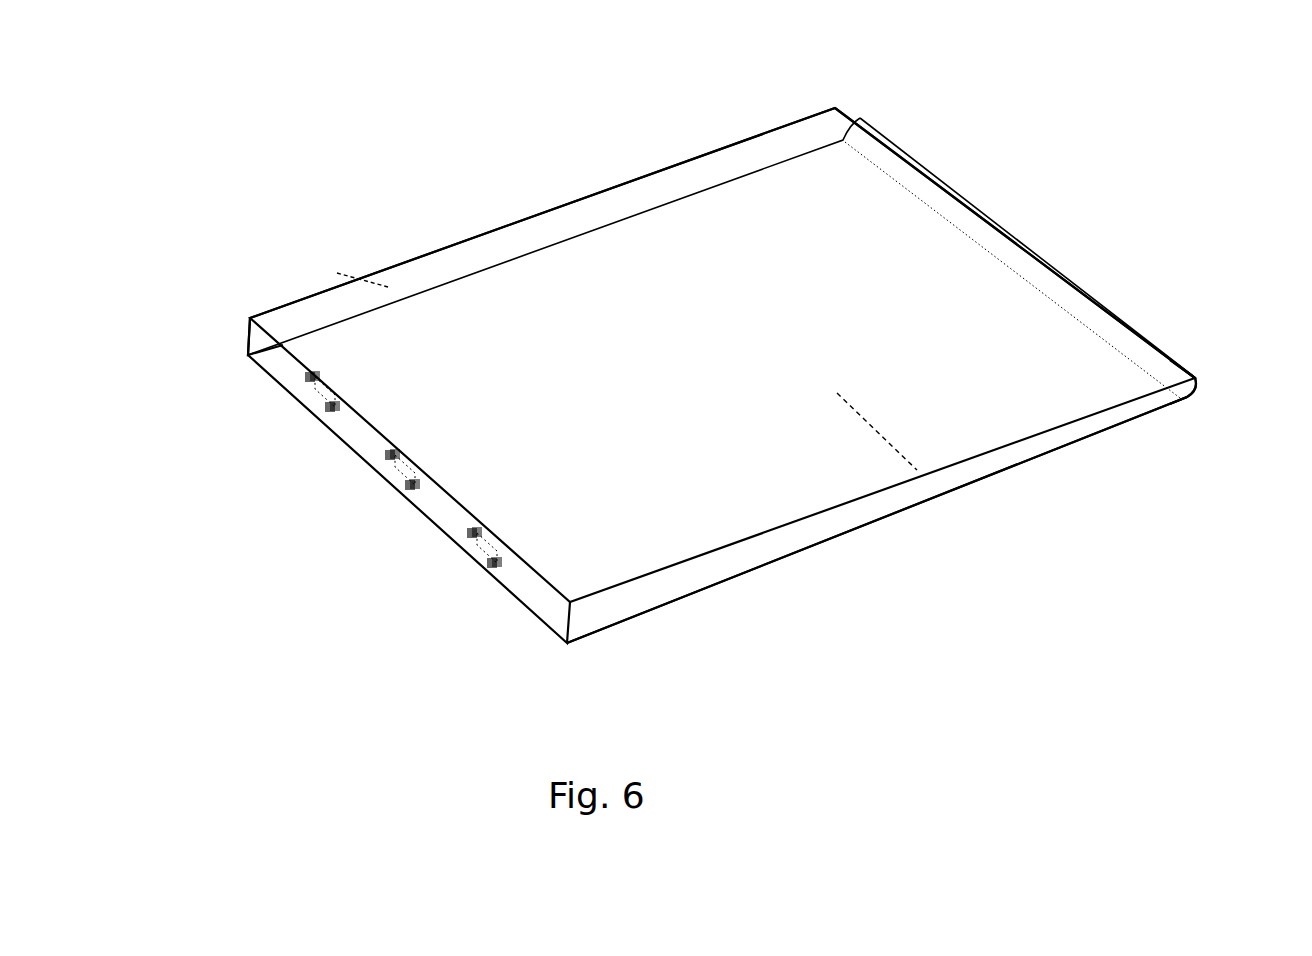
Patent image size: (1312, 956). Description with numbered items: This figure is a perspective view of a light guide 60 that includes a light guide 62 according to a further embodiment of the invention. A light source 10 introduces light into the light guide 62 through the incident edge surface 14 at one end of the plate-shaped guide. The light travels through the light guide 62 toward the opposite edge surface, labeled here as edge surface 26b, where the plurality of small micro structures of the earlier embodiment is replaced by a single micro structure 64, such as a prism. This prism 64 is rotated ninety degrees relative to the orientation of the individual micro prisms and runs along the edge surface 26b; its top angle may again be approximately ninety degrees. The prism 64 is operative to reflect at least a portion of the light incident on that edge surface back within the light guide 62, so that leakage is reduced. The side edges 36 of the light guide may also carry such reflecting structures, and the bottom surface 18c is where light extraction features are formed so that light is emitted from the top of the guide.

The light source 10 is at (493, 538).
The incident edge surface 14 is at (283, 355).
The slot 18c is at (940, 493).
The corner 26b is at (1188, 393).
The side edges 36 is at (337, 273).
The light guide 60 is at (387, 168).
The light guide 62 is at (692, 207).
The micro structure 64 is at (1017, 237).